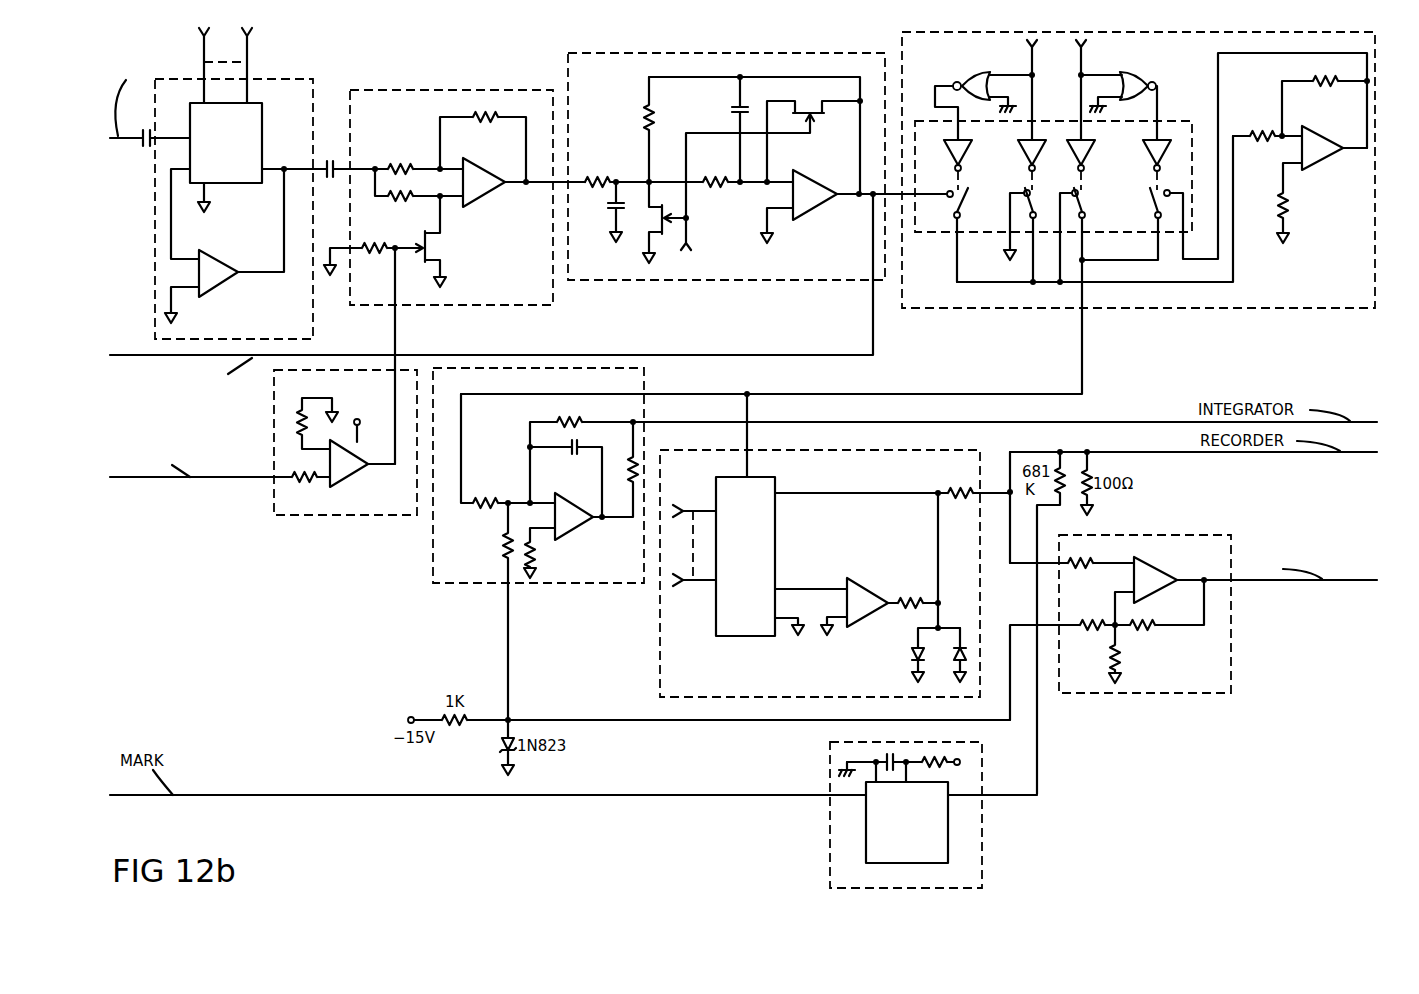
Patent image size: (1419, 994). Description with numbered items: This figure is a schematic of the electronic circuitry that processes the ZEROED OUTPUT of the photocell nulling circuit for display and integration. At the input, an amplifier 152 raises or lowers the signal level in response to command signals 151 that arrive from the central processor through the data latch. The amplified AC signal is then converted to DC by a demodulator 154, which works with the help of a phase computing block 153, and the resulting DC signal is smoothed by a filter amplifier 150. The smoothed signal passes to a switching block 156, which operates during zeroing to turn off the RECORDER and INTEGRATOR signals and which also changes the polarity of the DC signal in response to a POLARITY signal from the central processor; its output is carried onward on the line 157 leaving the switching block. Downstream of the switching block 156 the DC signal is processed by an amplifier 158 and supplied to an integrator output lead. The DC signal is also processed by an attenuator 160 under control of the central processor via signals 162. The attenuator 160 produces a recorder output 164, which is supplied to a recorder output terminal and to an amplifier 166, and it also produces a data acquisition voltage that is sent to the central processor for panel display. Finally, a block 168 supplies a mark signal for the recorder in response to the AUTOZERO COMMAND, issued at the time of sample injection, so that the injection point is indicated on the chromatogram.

The filter amplifier 150 is at (790, 283).
The command signals 151 is at (252, 58).
The amplifier 152 is at (313, 308).
The phase computing block 153 is at (313, 518).
The demodulator 154 is at (495, 308).
The switching block 156 is at (977, 311).
The switch output line 157 is at (1085, 368).
The amplifier 158 is at (447, 586).
The attenuator 160 is at (658, 660).
The signals 162 is at (693, 590).
The recorder output 164 is at (999, 489).
The amplifier 166 is at (1197, 695).
The mark signal block 168 is at (982, 860).